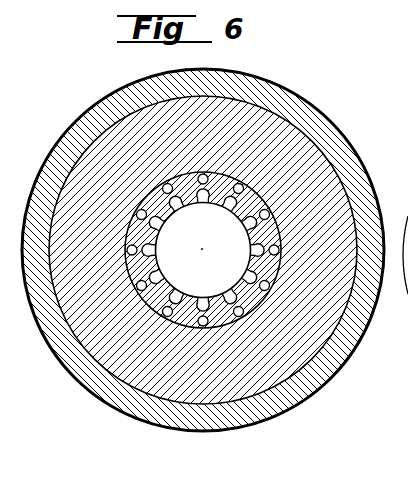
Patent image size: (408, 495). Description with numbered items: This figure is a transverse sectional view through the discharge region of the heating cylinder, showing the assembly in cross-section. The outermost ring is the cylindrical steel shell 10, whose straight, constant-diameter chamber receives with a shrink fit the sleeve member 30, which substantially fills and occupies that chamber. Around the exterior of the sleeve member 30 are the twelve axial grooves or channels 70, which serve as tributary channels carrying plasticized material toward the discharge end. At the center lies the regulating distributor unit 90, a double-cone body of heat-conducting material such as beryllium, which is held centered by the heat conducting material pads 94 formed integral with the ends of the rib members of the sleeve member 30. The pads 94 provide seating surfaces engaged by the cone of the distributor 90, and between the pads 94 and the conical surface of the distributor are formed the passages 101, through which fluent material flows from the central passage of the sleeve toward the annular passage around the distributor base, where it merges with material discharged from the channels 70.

The shell 10 is at (249, 382).
The sleeve member 30 is at (279, 219).
The grooves or channels 70 is at (166, 181).
The regulating distributor unit 90 is at (230, 272).
The heat conducting material pads 94 is at (206, 200).
The passages 101 is at (246, 186).